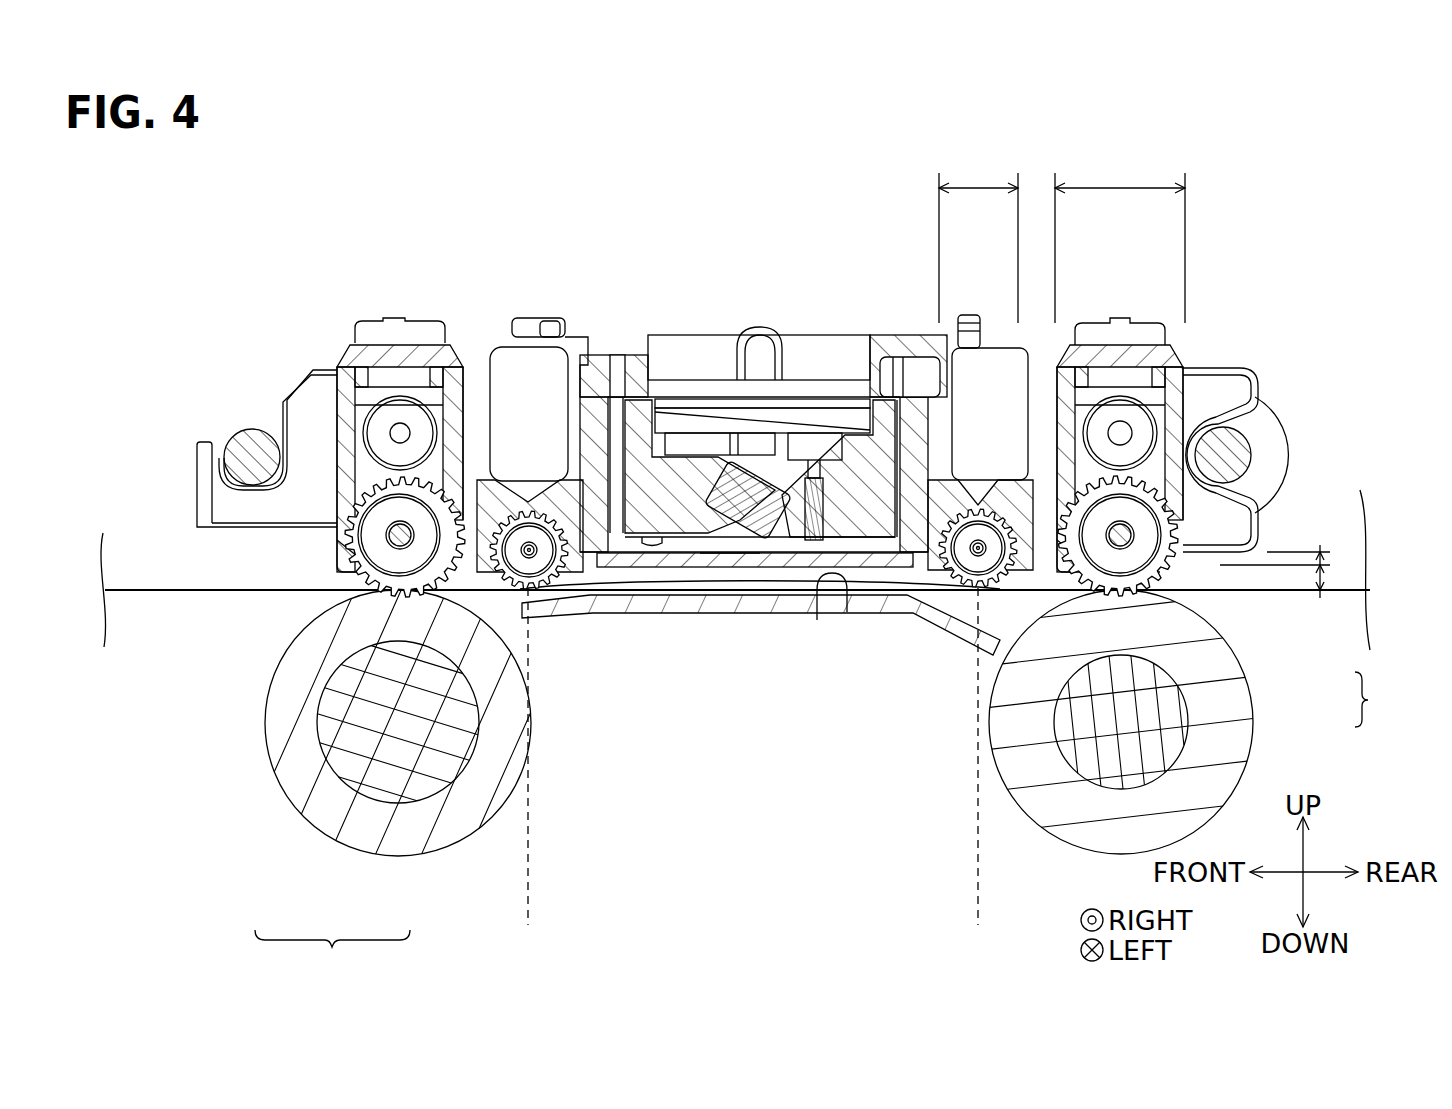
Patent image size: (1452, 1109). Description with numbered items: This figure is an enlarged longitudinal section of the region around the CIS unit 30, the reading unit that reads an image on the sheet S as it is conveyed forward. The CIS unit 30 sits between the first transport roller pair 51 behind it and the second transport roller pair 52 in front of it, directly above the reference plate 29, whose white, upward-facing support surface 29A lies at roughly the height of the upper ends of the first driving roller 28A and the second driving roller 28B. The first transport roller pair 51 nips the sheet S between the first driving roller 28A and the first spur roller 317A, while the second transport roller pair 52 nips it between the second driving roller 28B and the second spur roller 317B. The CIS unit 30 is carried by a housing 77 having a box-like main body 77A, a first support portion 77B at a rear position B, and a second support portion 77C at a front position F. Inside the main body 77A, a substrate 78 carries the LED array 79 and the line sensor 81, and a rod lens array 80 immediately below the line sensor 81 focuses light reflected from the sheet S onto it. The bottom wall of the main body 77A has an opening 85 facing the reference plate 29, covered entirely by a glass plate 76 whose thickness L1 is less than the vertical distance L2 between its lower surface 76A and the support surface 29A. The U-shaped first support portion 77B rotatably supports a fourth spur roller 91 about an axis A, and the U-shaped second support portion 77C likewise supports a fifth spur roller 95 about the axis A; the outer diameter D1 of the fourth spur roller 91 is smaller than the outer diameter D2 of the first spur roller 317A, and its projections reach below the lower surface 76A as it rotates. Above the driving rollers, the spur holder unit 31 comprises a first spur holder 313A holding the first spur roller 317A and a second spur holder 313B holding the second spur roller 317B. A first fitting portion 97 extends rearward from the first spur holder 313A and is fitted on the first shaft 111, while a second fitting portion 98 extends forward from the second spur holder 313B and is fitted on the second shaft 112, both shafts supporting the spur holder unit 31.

The spur holder unit 31 is at (796, 576).
The first spur holder 313A is at (1211, 499).
The second spur holder 313B is at (346, 624).
The first spur roller 317A is at (1182, 572).
The second spur roller 317B is at (362, 593).
The first driving roller 28A is at (1217, 783).
The second driving roller 28B is at (400, 840).
The first transport roller pair 51 is at (1380, 699).
The second transport roller pair 52 is at (332, 950).
The second shaft 112 is at (248, 440).
The second fitting portion 98 is at (228, 507).
The first fitting portion 97 is at (1240, 387).
The first shaft 111 is at (1240, 445).
The housing 77 is at (763, 453).
The main body 77A is at (913, 405).
The first support portion 77B is at (1007, 348).
The second support portion 77C is at (500, 493).
The substrate 78 is at (720, 418).
The LED array 79 is at (750, 470).
The rod lens array 80 is at (820, 503).
The line sensor 81 is at (817, 448).
The CIS unit 30 is at (830, 362).
The glass plate 76 is at (648, 558).
The lower surface 76A is at (722, 560).
The reference plate 29 is at (688, 603).
The support surface 29A is at (846, 620).
The opening 85 is at (888, 520).
The fourth spur roller 91 is at (975, 560).
The fifth spur roller 95 is at (535, 565).
The sheet S is at (148, 590).
The axis A is at (548, 565).
The front position F is at (528, 755).
The rear position B is at (980, 755).
The outer diameter D1 is at (977, 188).
The outer diameter D2 is at (1115, 188).
The thickness L1 is at (1324, 550).
The vertical distance L2 is at (1324, 563).